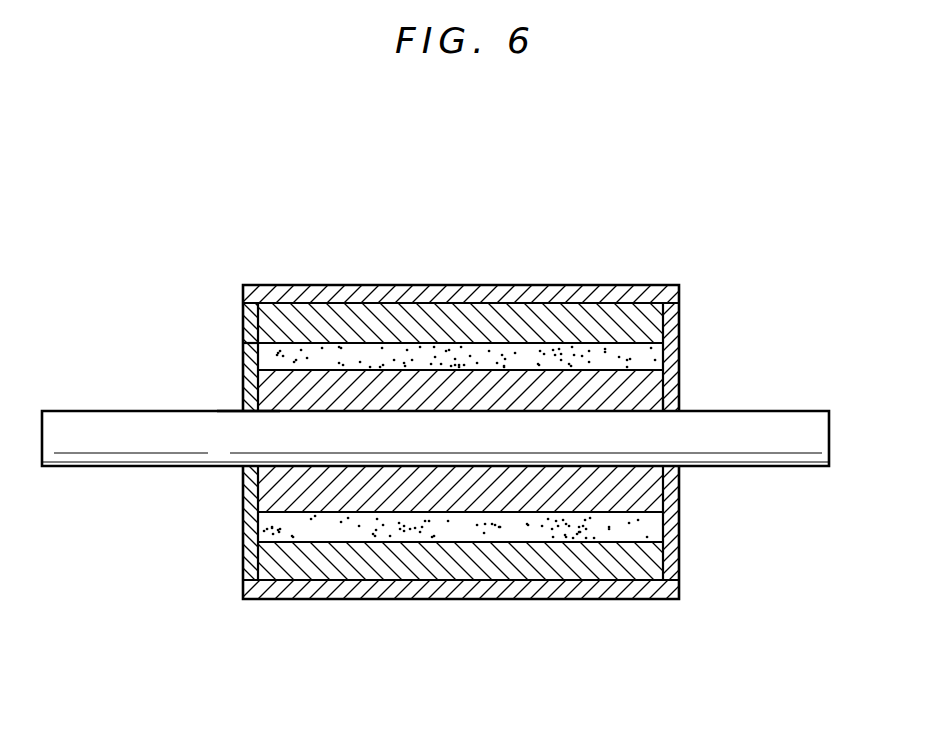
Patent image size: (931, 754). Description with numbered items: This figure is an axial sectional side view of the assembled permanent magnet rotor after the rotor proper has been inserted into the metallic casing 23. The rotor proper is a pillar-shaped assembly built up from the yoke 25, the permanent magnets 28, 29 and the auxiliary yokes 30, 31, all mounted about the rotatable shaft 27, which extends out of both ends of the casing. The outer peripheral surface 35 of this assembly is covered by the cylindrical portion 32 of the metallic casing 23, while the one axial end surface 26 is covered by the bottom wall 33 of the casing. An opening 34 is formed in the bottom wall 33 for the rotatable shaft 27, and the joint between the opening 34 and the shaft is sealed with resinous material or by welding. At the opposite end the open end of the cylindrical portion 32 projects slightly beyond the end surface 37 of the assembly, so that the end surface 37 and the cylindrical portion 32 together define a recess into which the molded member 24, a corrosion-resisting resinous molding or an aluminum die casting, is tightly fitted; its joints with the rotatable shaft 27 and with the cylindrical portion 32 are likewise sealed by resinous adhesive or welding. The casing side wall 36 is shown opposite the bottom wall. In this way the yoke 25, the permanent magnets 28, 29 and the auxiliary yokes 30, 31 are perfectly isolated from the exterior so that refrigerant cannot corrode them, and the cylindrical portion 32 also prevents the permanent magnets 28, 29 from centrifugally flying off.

The metallic casing 23 is at (459, 451).
The molded member 24 is at (252, 357).
The yoke 25 is at (512, 383).
The one axial end surface 26 is at (277, 412).
The rotatable shaft 27 is at (170, 438).
The permanent magnet 28 is at (653, 357).
The permanent magnet 29 is at (650, 522).
The auxiliary yoke 30 is at (583, 313).
The auxiliary yoke 31 is at (585, 567).
The cylindrical portion 32 is at (447, 300).
The bottom wall 33 is at (679, 378).
The opening 34 is at (670, 412).
The outer peripheral surface 35 is at (375, 293).
The right side wall 36 is at (670, 323).
The end surface 37 is at (242, 320).